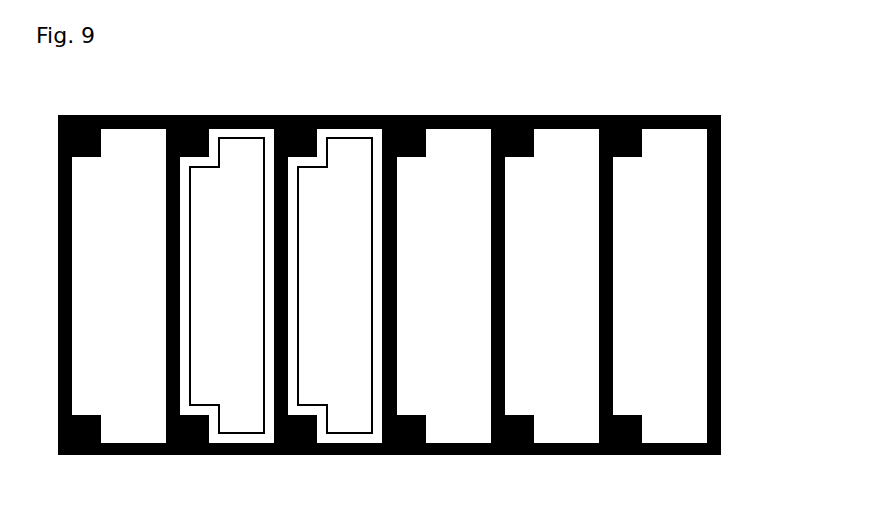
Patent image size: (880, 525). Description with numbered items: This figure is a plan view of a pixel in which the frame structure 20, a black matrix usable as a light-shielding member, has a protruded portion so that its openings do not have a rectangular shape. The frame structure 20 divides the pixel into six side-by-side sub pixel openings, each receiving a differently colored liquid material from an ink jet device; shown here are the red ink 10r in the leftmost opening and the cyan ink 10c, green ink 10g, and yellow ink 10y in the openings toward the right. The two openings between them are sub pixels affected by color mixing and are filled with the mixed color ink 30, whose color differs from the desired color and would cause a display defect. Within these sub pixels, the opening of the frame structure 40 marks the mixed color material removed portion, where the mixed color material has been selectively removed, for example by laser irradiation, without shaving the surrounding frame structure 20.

The frame structure 20 is at (72, 455).
The red (R) ink 10r is at (117, 427).
The mixed color ink 30 is at (223, 437).
The opening of frame structure 40 is at (235, 148).
The cyan (C) ink 10c is at (437, 427).
The green (G) ink 10g is at (550, 427).
The yellow (Y) ink 10y is at (658, 427).